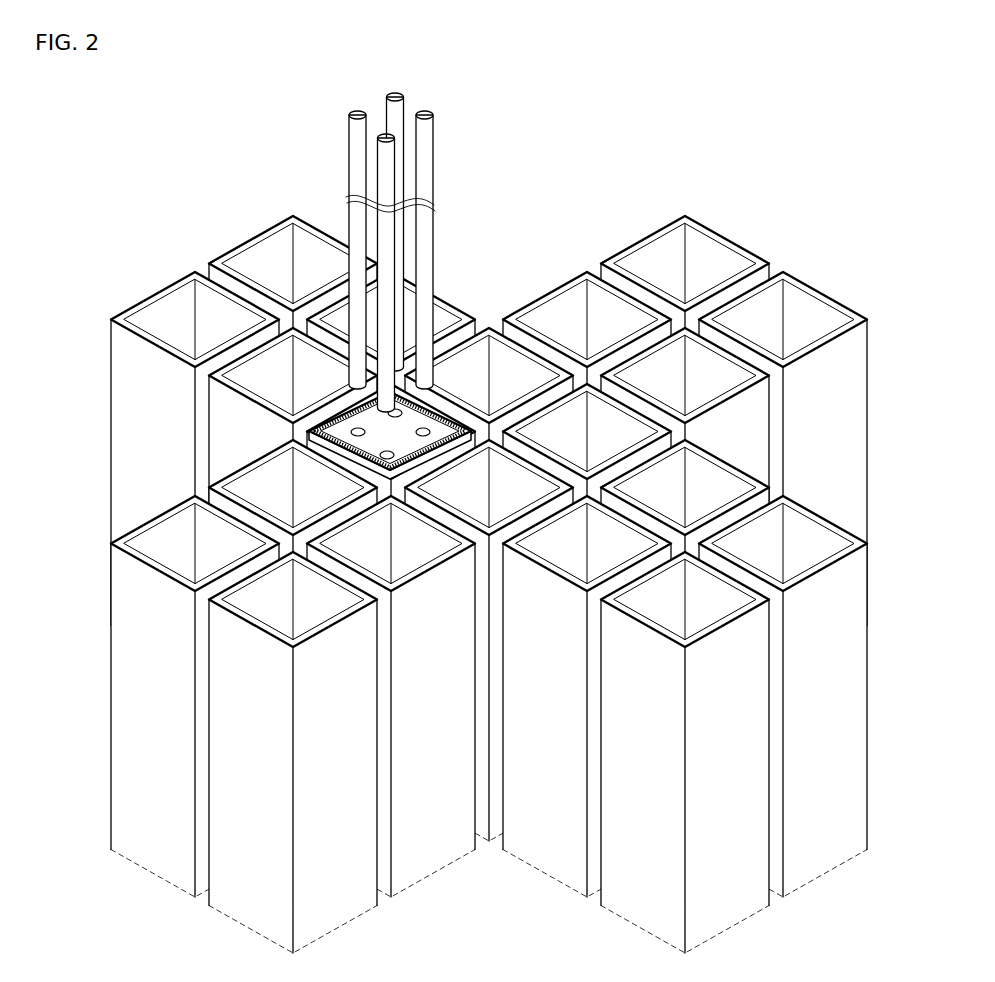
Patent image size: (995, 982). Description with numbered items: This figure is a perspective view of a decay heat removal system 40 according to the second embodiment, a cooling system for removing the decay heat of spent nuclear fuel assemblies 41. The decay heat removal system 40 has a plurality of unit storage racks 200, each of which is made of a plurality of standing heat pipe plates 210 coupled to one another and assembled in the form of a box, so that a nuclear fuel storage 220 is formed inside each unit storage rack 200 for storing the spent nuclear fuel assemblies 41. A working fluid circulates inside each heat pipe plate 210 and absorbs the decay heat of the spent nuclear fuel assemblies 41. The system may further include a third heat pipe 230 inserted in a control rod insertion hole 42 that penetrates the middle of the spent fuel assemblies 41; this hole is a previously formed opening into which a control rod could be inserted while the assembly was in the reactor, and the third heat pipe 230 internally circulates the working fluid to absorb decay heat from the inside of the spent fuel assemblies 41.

The unit storage rack 200 is at (489, 576).
The heat pipe plate 210 is at (433, 410).
The nuclear fuel storage 220 is at (668, 272).
The third heat pipe 230 is at (432, 166).
The decay heat removal system 40 is at (289, 313).
The spent nuclear fuel assembly 41 is at (341, 430).
The control rod insertion hole 42 is at (360, 440).